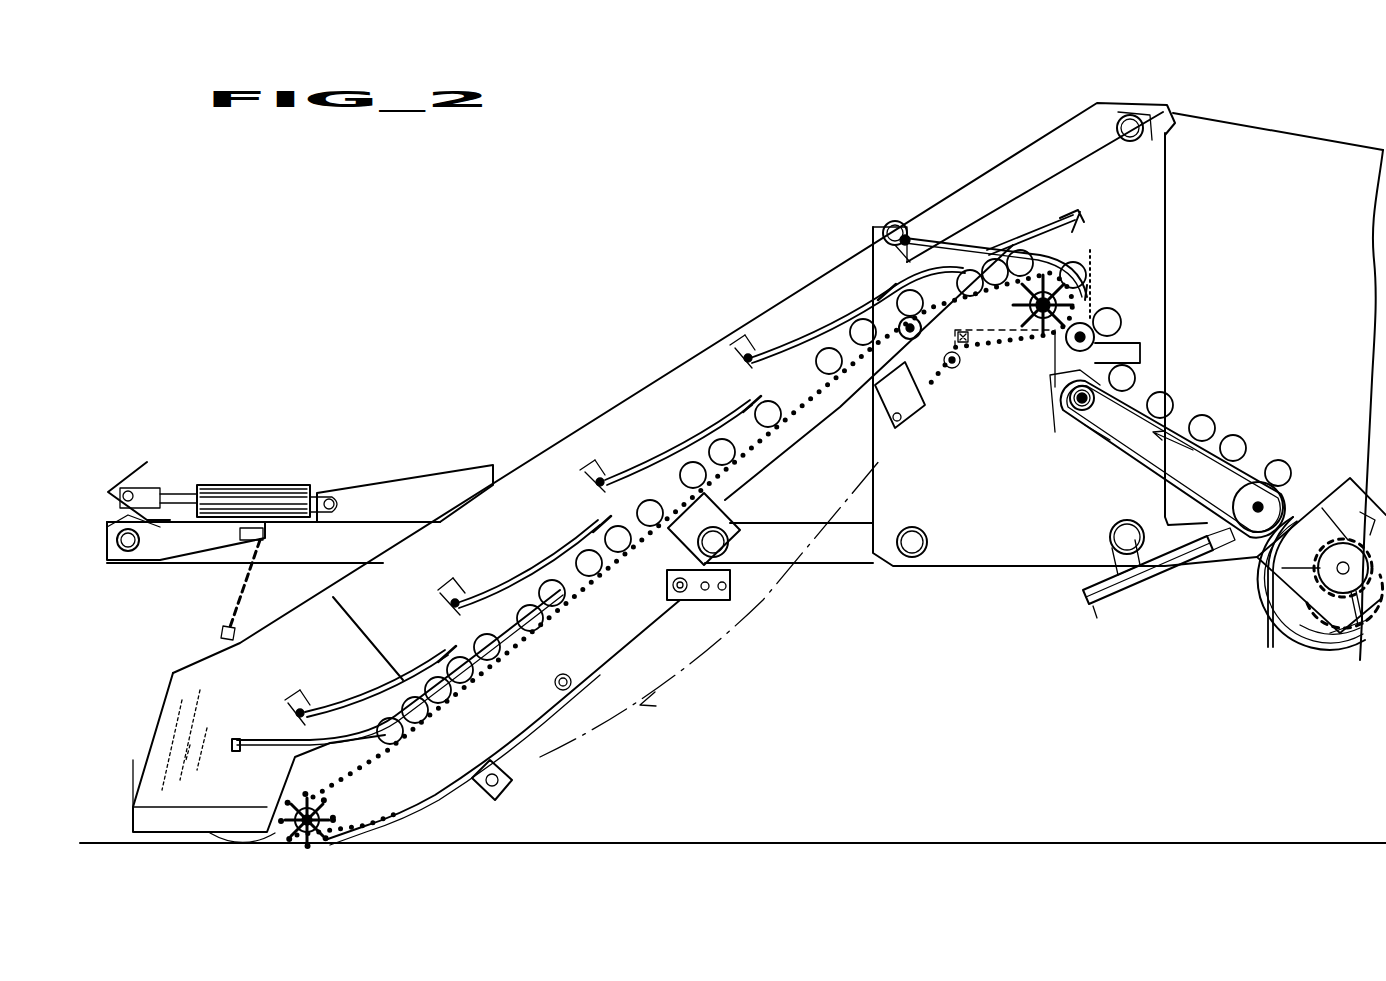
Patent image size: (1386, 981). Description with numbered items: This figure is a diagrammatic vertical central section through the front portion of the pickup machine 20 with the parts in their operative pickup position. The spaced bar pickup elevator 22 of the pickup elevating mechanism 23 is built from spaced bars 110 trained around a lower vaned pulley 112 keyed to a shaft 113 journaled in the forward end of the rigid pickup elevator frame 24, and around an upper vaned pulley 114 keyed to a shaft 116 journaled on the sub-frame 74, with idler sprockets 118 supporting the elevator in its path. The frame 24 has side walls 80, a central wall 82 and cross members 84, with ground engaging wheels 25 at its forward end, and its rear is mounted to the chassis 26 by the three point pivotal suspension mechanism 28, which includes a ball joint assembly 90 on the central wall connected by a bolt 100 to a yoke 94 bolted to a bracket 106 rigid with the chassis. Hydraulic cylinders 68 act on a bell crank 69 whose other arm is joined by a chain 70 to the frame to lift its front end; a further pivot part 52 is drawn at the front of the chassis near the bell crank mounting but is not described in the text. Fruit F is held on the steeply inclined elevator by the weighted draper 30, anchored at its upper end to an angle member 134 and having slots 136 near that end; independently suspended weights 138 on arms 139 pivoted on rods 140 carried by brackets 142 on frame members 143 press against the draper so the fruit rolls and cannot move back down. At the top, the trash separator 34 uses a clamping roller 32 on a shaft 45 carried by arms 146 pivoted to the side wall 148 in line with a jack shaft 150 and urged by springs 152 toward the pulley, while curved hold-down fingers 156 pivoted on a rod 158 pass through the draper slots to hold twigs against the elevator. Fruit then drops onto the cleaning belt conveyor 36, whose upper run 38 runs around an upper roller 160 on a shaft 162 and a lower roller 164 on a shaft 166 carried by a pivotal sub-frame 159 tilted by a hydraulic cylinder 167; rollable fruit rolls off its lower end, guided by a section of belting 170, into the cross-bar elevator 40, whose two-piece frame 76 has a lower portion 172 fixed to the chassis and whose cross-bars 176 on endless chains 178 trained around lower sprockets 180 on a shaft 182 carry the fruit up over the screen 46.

The pickup machine 20 is at (555, 305).
The spaced bar pickup elevator 22 is at (308, 786).
The pickup elevating mechanism 23 is at (533, 420).
The pickup elevator frame 24 is at (160, 705).
The ground engaging wheels 25 is at (238, 843).
The chassis 26 is at (850, 565).
The three point pivotal suspension mechanism 28 is at (732, 603).
The weighted draper 30 is at (275, 742).
The clamping roller 32 is at (232, 745).
The trash separator 34 is at (1090, 245).
The cleaning belt conveyor 36 is at (1128, 460).
The upper run 38 is at (1182, 418).
The cross-bar elevator 40 is at (1315, 470).
The shaft 45 is at (1100, 356).
The screen 46 is at (1333, 518).
The pivot bracket 52 is at (170, 557).
The hydraulic cylinders 68 is at (272, 490).
The bell crank 69 is at (140, 478).
The chain 70 is at (245, 592).
The sub-frame 74 is at (1168, 180).
The two-piece frame 76 is at (1362, 478).
The side walls 80 is at (150, 762).
The central wall 82 is at (440, 772).
The cross members 84 is at (566, 675).
The ball joint assembly 90 is at (680, 604).
The yoke 94 is at (700, 598).
The bolt 100 is at (668, 588).
The bracket 106 is at (735, 548).
The spaced bars 110 is at (387, 747).
The lower vaned pulley 112 is at (322, 820).
The shaft 113 is at (320, 803).
The upper vaned pulley 114 is at (1068, 300).
The shaft 116 is at (1028, 310).
The idler sprockets 118 is at (500, 788).
The angle member 134 is at (1068, 225).
The slots 136 is at (1027, 250).
The independently suspended weights 138 is at (440, 655).
The arms 139 is at (350, 705).
The rods 140 is at (448, 606).
The brackets 142 is at (452, 597).
The frame members 143 is at (442, 575).
The arms 146 is at (1020, 345).
The side wall 148 is at (962, 530).
The jack shaft 150 is at (956, 355).
The springs 152 is at (1097, 258).
The curved hold-down fingers 156 is at (968, 247).
The rod 158 is at (903, 232).
The pivotal sub-frame 159 is at (1090, 437).
The upper roller 160 is at (1074, 405).
The shaft 162 is at (1086, 410).
The lower roller 164 is at (1260, 492).
The shaft 166 is at (1256, 505).
The hydraulic cylinder 167 is at (1116, 605).
The section of belting 170 is at (1266, 630).
The lower portion 172 is at (1338, 648).
The cross-bars 176 is at (1330, 636).
The endless chains 178 is at (1318, 560).
The lower sprockets 180 is at (1356, 628).
The shaft 182 is at (1340, 580).
The fruit F is at (460, 690).